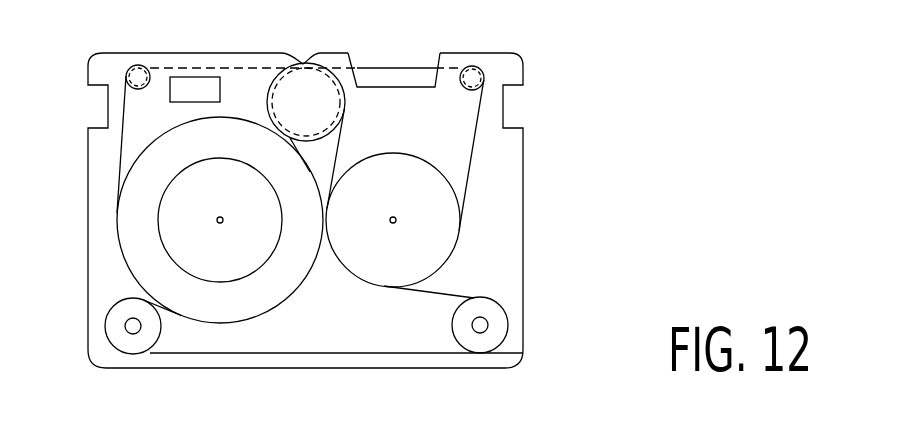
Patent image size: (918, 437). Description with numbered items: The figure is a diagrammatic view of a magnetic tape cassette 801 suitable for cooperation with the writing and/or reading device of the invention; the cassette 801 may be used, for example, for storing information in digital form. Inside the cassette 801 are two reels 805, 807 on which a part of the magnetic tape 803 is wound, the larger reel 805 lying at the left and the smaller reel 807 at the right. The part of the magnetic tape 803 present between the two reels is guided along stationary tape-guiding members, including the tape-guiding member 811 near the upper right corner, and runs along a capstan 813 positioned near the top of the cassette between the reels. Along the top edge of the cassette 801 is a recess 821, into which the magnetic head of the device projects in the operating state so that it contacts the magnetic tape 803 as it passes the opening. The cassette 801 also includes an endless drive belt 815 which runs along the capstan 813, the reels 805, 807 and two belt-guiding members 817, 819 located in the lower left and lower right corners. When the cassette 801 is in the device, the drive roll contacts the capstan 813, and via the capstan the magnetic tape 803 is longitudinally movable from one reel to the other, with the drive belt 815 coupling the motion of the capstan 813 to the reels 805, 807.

The cassette 801 is at (523, 186).
The magnetic tape 803 is at (377, 68).
The reel 805 is at (173, 228).
The reel 807 is at (445, 233).
The tape-guiding member 811 is at (470, 70).
The capstan 813 is at (288, 88).
The endless drive belt 815 is at (275, 353).
The belt-guiding member 817 is at (130, 345).
The belt-guiding member 819 is at (478, 350).
The recess 821 is at (423, 62).